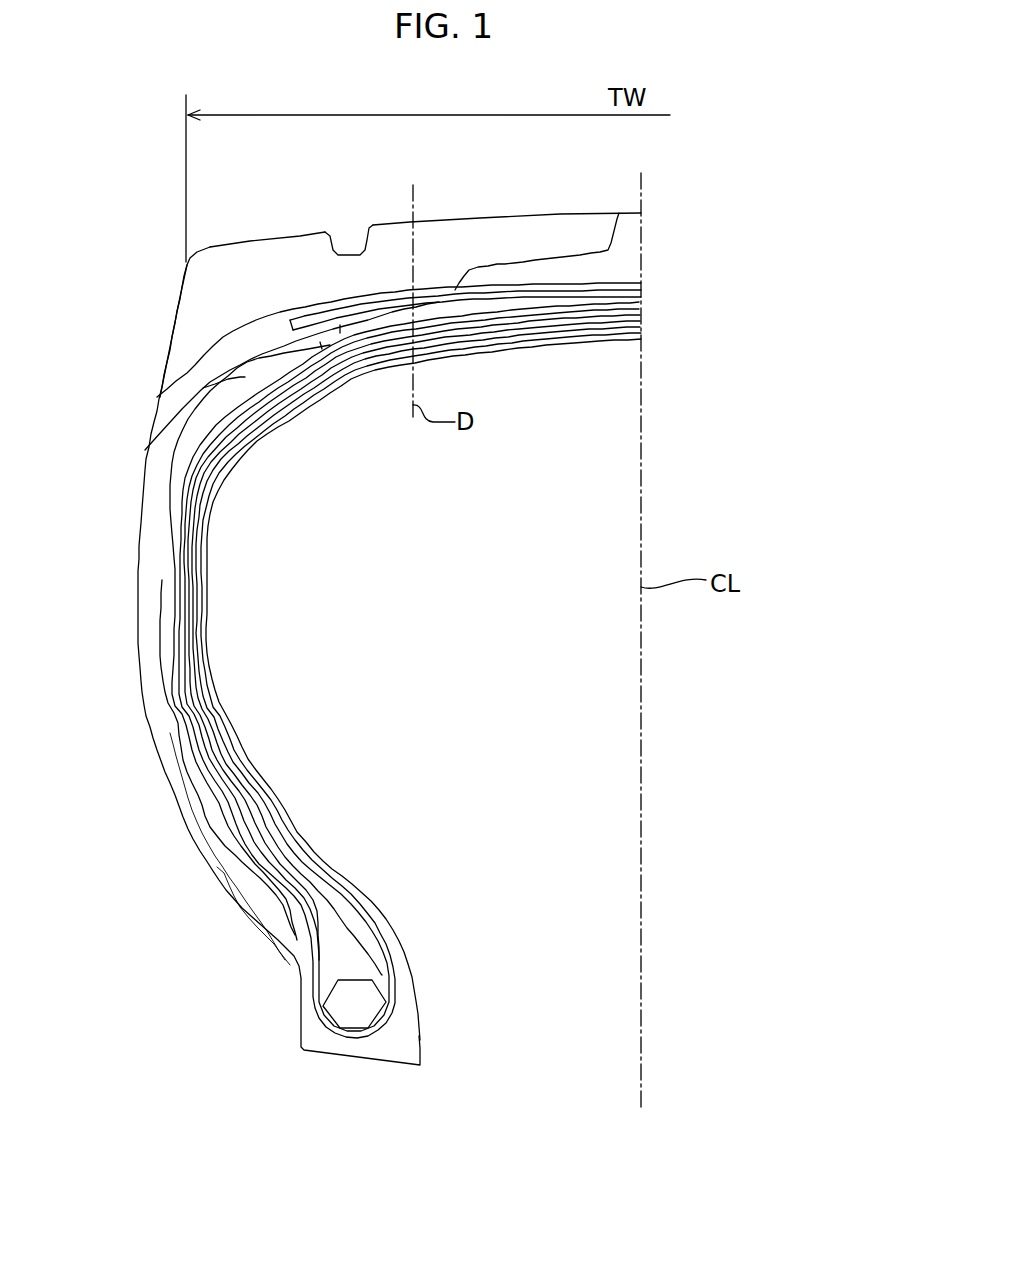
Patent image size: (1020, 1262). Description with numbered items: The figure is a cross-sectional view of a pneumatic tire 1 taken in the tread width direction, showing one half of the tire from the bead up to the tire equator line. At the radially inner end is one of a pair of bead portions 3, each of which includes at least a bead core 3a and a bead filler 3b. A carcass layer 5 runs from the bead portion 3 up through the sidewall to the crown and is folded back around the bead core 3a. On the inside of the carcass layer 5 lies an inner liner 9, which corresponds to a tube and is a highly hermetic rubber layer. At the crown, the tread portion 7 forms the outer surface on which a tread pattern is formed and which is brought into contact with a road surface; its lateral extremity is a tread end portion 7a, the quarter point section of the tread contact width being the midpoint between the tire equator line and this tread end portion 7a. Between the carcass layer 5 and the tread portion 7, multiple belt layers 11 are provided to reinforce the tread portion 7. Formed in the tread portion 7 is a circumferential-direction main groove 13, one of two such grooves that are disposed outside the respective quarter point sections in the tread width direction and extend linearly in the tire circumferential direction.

The pneumatic tire 1 is at (130, 247).
The bead portion 3 is at (478, 922).
The bead core 3a is at (362, 1000).
The bead filler 3b is at (345, 960).
The carcass layer 5 is at (243, 796).
The tread portion 7 is at (266, 228).
The tread end portion 7a is at (186, 262).
The inner liner 9 is at (311, 853).
The belt layer 11 is at (527, 343).
The circumferential-direction main groove 13 is at (345, 243).